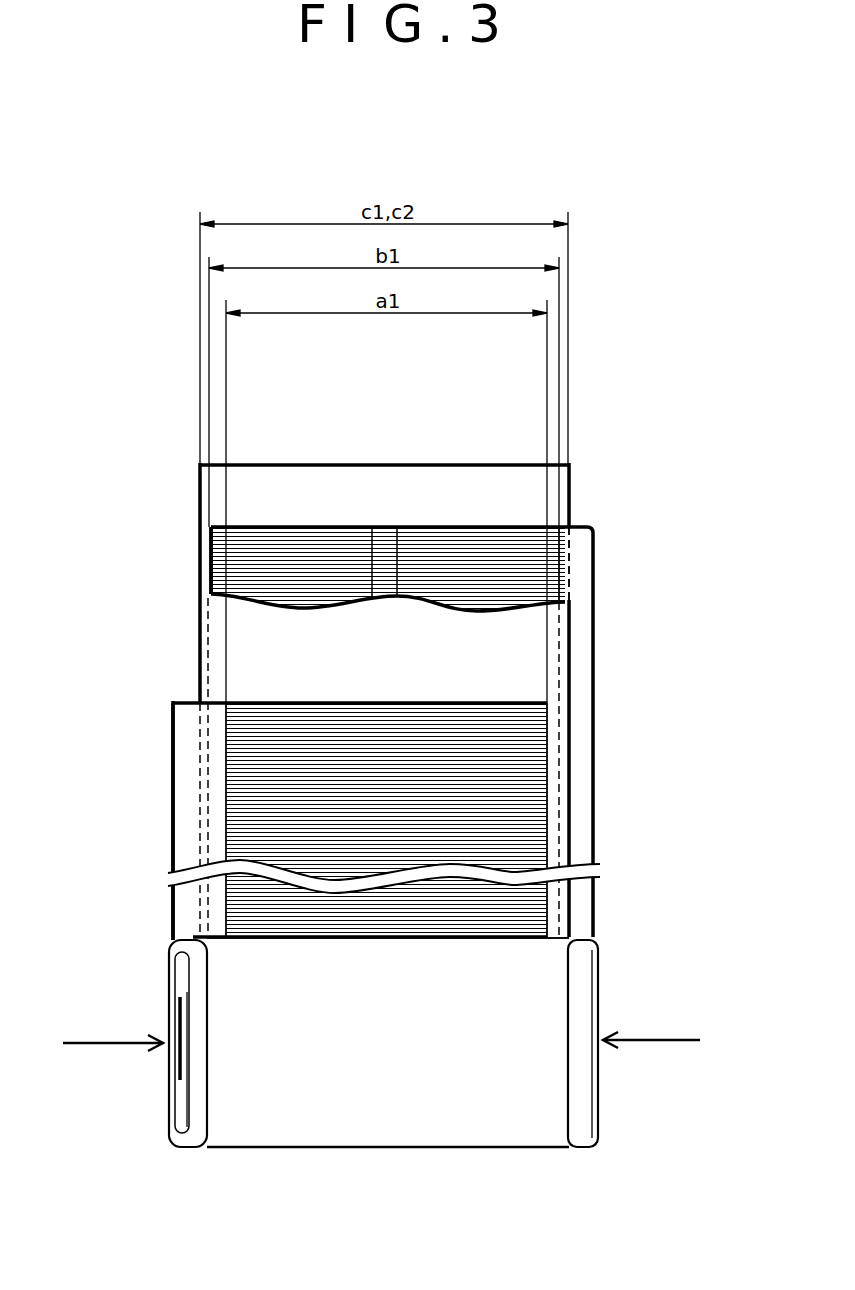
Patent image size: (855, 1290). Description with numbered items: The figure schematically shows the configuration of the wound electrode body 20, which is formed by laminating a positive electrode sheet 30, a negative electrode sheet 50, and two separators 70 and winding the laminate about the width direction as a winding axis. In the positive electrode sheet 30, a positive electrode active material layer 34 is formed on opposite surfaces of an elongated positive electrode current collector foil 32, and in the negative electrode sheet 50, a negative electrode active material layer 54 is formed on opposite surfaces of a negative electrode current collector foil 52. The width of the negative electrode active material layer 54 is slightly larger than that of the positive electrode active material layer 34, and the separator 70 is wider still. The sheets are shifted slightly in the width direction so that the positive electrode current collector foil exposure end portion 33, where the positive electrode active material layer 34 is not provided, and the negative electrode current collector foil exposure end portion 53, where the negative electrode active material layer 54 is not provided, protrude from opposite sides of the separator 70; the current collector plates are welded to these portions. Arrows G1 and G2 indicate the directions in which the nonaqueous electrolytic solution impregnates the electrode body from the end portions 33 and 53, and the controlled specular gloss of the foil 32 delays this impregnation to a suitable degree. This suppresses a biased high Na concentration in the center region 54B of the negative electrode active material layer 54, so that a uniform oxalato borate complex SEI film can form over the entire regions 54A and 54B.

The wound electrode body 20 is at (423, 1085).
The positive electrode sheet 30 is at (173, 730).
The positive electrode current collector foil 32 is at (190, 805).
The positive electrode current collector foil exposure end portion 33 is at (193, 967).
The positive electrode active material layer 34 is at (260, 780).
The negative electrode sheet 50 is at (598, 540).
The negative electrode current collector foil 52 is at (577, 590).
The negative electrode current collector foil exposure end portion 53 is at (585, 970).
The negative electrode active material layer 54 is at (485, 547).
The region of the negative electrode active material layer 54A is at (305, 598).
The center region of the negative electrode active material layer 54B is at (385, 585).
The separator 70 is at (218, 495).
The impregnation direction of nonaqueous electrolytic solution G1 is at (112, 1043).
The impregnation direction of nonaqueous electrolytic solution G2 is at (653, 1040).